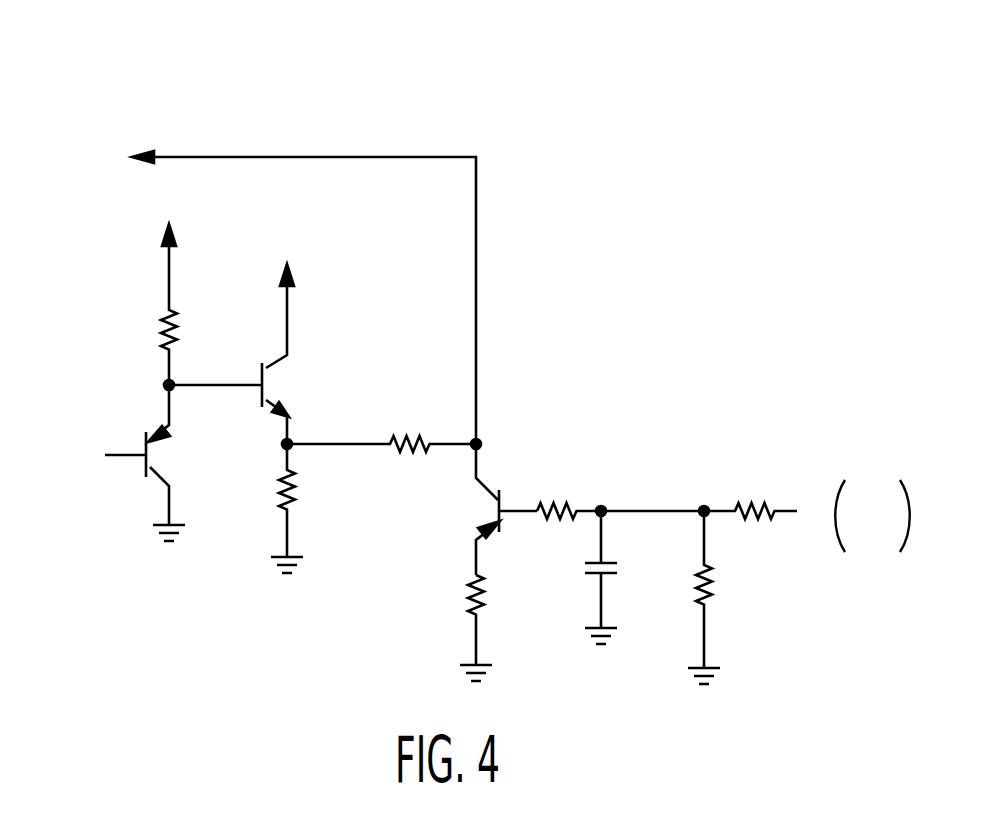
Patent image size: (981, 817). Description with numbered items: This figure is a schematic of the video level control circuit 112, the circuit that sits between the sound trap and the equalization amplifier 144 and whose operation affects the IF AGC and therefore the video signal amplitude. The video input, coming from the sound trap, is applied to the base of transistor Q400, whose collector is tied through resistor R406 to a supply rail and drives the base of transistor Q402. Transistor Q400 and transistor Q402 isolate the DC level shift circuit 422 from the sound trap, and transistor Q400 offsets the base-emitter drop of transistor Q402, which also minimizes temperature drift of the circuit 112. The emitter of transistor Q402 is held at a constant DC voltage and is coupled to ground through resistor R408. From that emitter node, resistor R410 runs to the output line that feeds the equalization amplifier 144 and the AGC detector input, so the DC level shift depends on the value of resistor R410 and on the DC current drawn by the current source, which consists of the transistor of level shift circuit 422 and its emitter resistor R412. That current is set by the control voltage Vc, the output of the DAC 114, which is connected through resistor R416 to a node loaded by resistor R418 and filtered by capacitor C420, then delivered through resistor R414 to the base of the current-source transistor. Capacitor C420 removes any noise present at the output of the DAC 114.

The video level control circuit 112 is at (347, 122).
The equalization amplifier 144 is at (256, 278).
The DAC 114 is at (857, 518).
The DC level shift circuit 422 is at (444, 572).
The resistor R406 is at (193, 304).
The transistor Q400 is at (135, 463).
The transistor Q402 is at (295, 339).
The resistor R408 is at (307, 508).
The resistor R410 is at (381, 428).
The resistor R412 is at (496, 628).
The resistor R414 is at (620, 494).
The capacitor C420 is at (624, 577).
The resistor R416 is at (750, 495).
The resistor R418 is at (724, 597).